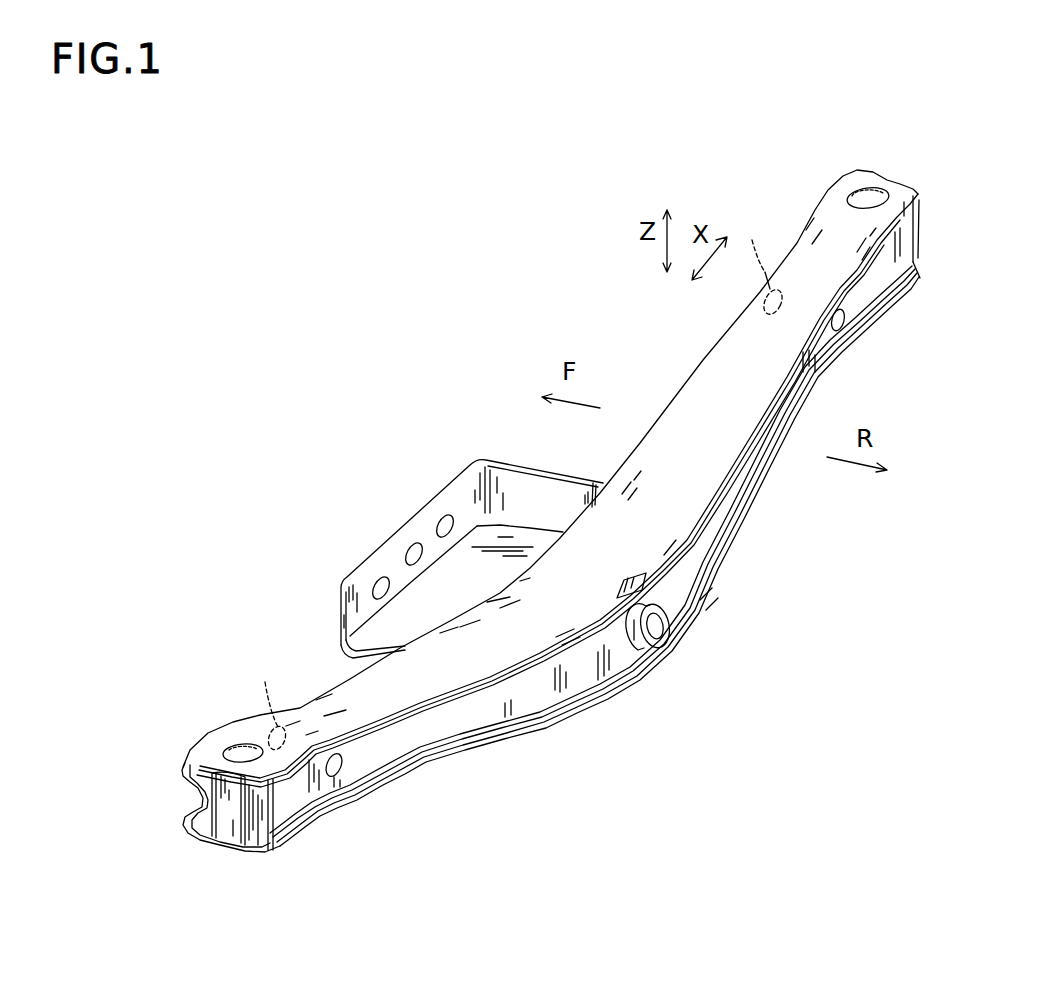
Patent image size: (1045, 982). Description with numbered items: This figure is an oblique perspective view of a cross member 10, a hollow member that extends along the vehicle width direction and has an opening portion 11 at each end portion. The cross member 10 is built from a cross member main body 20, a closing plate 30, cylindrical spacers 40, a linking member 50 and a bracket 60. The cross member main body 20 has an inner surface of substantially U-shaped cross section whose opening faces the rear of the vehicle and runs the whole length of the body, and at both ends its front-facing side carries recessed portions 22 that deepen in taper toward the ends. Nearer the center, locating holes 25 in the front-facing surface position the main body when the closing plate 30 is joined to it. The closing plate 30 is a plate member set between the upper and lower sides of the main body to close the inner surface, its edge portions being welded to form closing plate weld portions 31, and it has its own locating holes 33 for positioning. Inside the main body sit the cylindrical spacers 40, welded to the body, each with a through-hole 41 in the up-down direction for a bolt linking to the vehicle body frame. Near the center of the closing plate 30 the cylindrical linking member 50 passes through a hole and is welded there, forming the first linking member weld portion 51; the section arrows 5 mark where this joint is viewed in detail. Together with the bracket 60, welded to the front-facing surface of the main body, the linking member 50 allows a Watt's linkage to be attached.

The cross member 10 is at (222, 222).
The opening portion 11 is at (210, 828).
The cross member main body 20 is at (350, 698).
The recessed portion 22 is at (196, 799).
The locating hole 25 is at (524, 483).
The closing plate 30 is at (486, 707).
The closing plate weld portion 31 is at (563, 700).
The locating hole 33 is at (343, 768).
The cylindrical spacer 40 is at (228, 825).
The through-hole 41 is at (238, 753).
The linking member 50 is at (665, 615).
The first linking member weld portion 51 is at (628, 648).
The bracket 60 is at (430, 533).
The section line indicator 5 is at (484, 592).